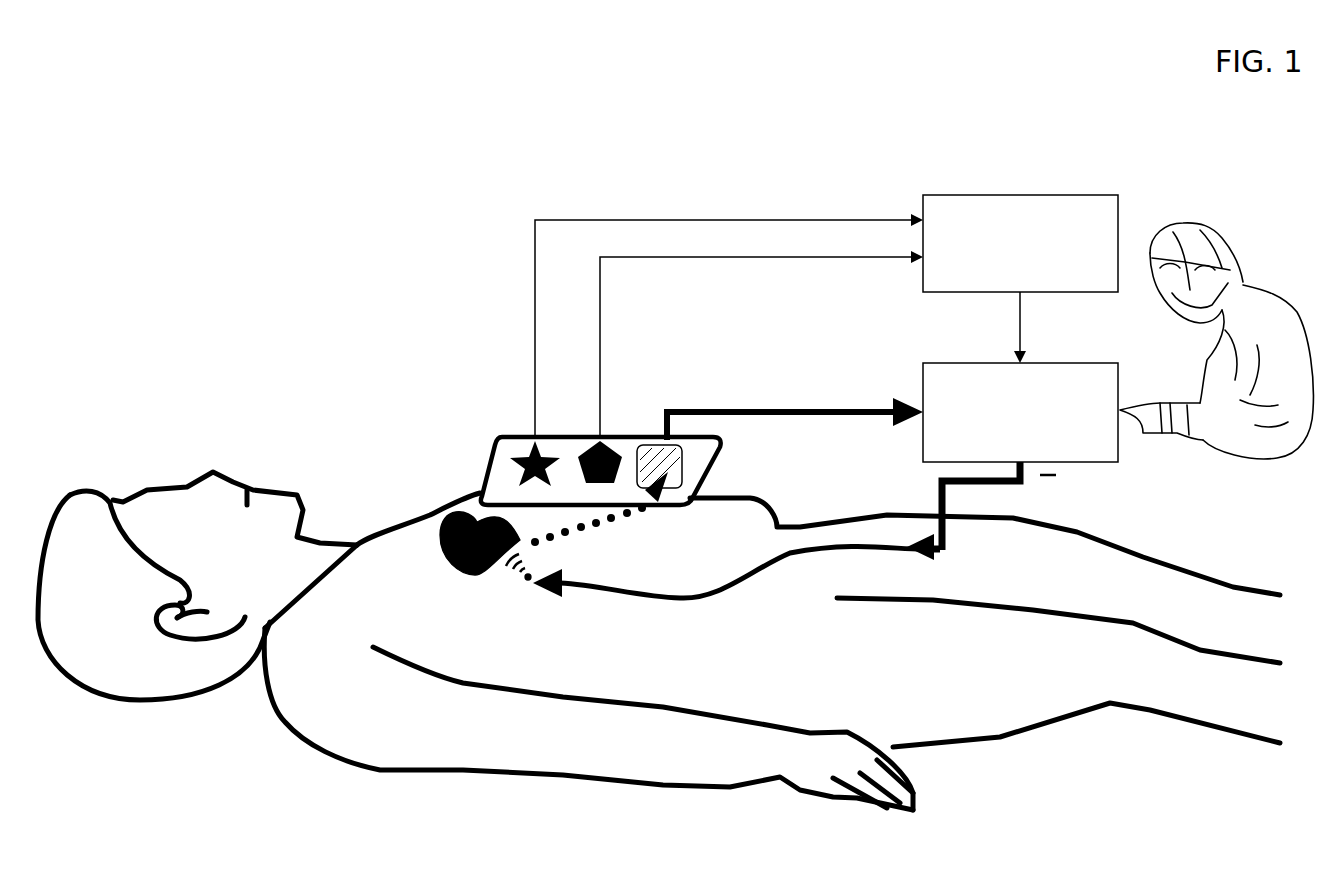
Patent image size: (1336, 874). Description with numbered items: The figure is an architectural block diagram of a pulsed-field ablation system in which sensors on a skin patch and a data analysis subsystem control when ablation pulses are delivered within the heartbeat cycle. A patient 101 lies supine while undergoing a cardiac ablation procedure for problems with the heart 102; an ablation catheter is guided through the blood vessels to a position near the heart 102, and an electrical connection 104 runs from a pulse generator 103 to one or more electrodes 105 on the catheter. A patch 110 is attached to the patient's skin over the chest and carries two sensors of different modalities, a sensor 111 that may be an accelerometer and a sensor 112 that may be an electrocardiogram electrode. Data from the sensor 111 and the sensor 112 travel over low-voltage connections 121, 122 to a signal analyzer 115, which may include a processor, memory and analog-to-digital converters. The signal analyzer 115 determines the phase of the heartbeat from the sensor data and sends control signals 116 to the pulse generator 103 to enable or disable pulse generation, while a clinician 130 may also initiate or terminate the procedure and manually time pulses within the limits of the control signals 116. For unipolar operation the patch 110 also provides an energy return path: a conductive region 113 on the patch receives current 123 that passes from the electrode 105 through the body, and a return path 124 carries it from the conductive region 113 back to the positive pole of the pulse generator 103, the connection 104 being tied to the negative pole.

The patient 101 is at (363, 540).
The heart 102 is at (447, 545).
The pulse generator 103 is at (923, 393).
The electrical connection 104 is at (727, 592).
The electrode 105 is at (527, 581).
The patch 110 is at (460, 448).
The sensor 111 is at (507, 443).
The sensor 112 is at (585, 447).
The conductive region 113 is at (648, 437).
The signal analyzer 115 is at (1120, 220).
The control signals 116 is at (1023, 340).
The connection 121 is at (533, 278).
The connection 122 is at (603, 337).
The current 123 is at (610, 520).
The return path 124 is at (803, 410).
The clinician 130 is at (1247, 310).